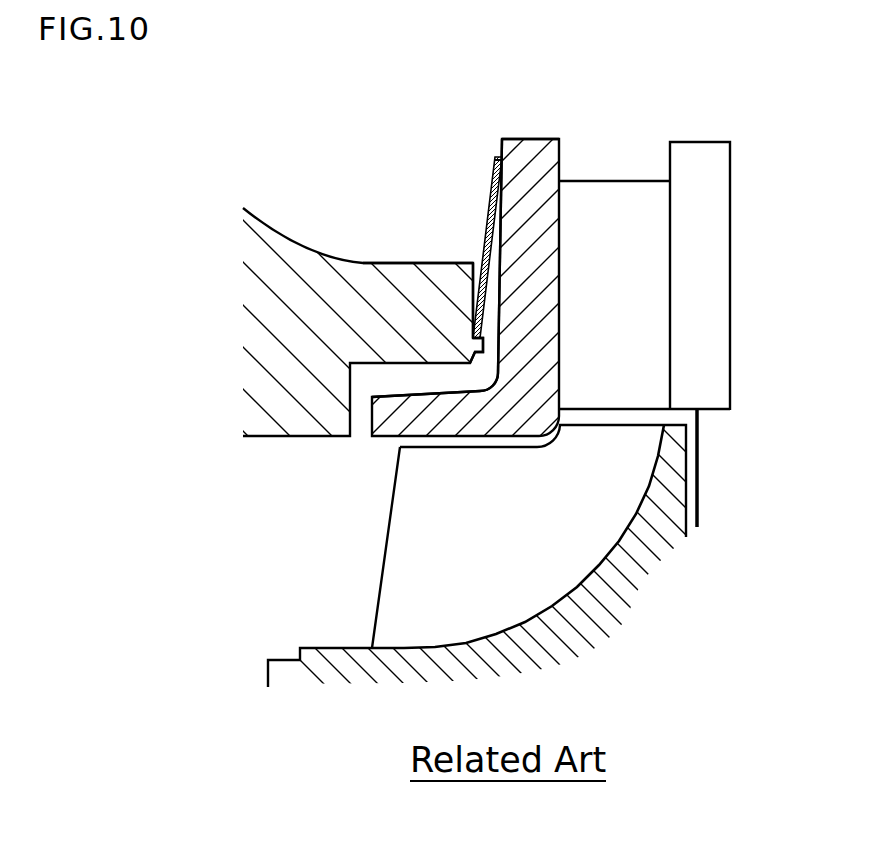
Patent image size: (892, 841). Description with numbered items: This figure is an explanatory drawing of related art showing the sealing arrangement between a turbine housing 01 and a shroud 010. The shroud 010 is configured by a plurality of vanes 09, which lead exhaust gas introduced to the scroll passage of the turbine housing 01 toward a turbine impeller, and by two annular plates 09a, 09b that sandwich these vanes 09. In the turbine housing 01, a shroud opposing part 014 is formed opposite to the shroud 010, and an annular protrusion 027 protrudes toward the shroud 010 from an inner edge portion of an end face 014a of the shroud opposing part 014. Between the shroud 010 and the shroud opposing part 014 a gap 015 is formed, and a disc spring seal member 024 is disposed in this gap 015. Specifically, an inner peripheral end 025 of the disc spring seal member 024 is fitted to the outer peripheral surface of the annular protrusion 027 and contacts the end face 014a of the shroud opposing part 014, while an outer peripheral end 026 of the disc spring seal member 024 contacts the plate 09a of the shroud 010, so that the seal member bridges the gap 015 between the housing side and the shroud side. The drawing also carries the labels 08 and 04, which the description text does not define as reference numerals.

The turbine housing 01 is at (275, 228).
The seal structure 08 is at (378, 88).
The shroud 010 is at (529, 138).
The annular plate 09a is at (541, 162).
The annular plate 09b is at (696, 165).
The vane 09 is at (612, 200).
The disc spring seal member 024 is at (490, 200).
The outer peripheral end 026 is at (497, 158).
The shroud opposing part 014 is at (448, 307).
The end face 014a is at (470, 285).
The gap 015 is at (477, 268).
The inner peripheral end 025 is at (483, 347).
The annular protrusion 027 is at (480, 350).
The rotor blade 04 is at (417, 586).